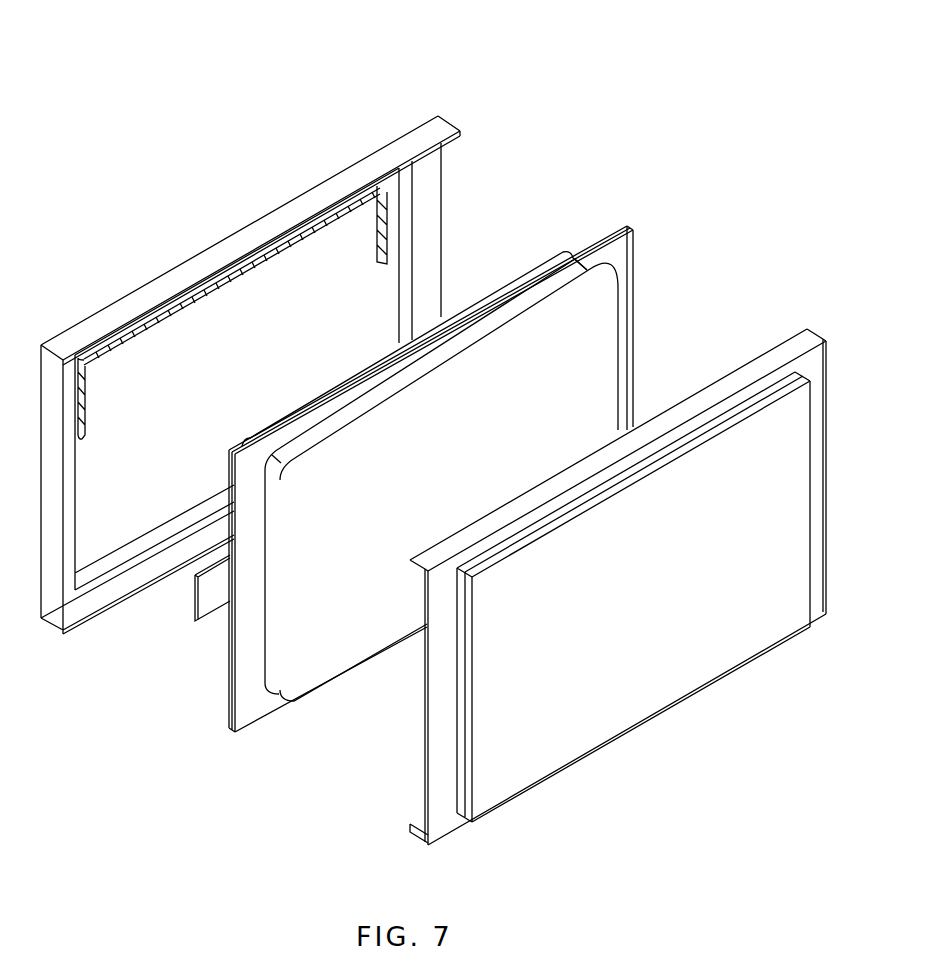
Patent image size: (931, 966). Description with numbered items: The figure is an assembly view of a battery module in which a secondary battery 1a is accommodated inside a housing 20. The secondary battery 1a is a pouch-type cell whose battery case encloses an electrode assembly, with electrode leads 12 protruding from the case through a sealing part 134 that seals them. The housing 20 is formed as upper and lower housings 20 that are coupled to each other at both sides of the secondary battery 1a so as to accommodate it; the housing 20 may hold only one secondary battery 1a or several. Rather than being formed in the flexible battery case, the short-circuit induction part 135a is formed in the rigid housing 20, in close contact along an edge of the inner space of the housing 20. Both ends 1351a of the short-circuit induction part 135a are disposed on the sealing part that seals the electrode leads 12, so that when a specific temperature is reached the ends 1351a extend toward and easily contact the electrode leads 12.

The secondary battery 1a is at (625, 226).
The electrode lead 12 is at (218, 604).
The housing 20 is at (433, 480).
The sealing part 134 is at (253, 712).
The short-circuit induction part 135a is at (227, 277).
The ends of short-circuit induction part 1351a is at (377, 258).